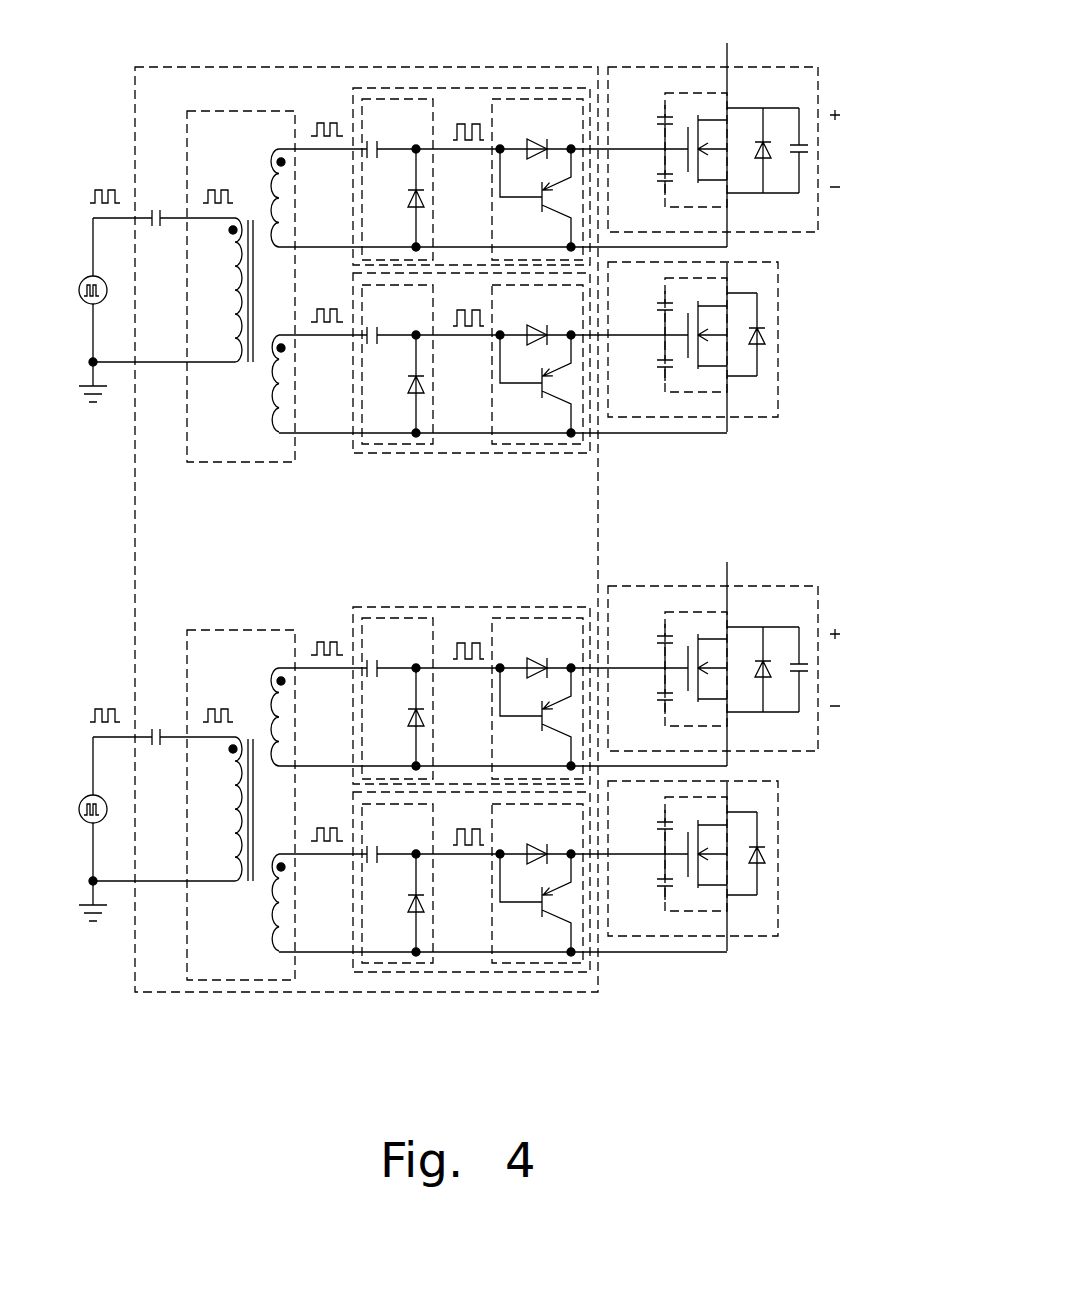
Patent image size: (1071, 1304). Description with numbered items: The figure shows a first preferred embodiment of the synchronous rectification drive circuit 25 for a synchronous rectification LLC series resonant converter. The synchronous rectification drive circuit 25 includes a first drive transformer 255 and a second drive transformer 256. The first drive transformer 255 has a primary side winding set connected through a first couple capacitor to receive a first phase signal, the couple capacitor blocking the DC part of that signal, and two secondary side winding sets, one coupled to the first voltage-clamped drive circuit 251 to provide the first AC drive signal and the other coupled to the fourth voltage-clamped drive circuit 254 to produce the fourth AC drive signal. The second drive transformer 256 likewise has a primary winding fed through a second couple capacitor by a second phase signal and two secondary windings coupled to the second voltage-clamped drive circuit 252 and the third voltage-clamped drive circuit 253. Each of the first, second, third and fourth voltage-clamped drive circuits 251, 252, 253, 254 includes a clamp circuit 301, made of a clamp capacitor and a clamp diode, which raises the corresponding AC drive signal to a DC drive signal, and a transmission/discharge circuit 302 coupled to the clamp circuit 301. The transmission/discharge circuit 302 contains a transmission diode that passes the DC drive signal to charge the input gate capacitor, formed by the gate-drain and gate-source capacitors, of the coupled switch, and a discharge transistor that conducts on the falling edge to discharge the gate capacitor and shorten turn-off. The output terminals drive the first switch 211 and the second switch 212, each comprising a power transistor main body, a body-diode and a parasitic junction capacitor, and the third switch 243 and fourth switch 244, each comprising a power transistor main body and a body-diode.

The synchronous rectification drive circuit 25 is at (222, 67).
The first drive transformer 255 is at (207, 462).
The second drive transformer 256 is at (210, 629).
The first voltage-clamped drive circuit 251 is at (460, 88).
The second voltage-clamped drive circuit 252 is at (460, 607).
The third voltage-clamped drive circuit 253 is at (457, 972).
The fourth voltage-clamped drive circuit 254 is at (457, 453).
The clamp circuit 301 is at (386, 97).
The transmission/discharge circuit 302 is at (557, 97).
The first switch 211 is at (650, 67).
The second switch 212 is at (752, 586).
The third switch 243 is at (778, 820).
The fourth switch 244 is at (778, 303).